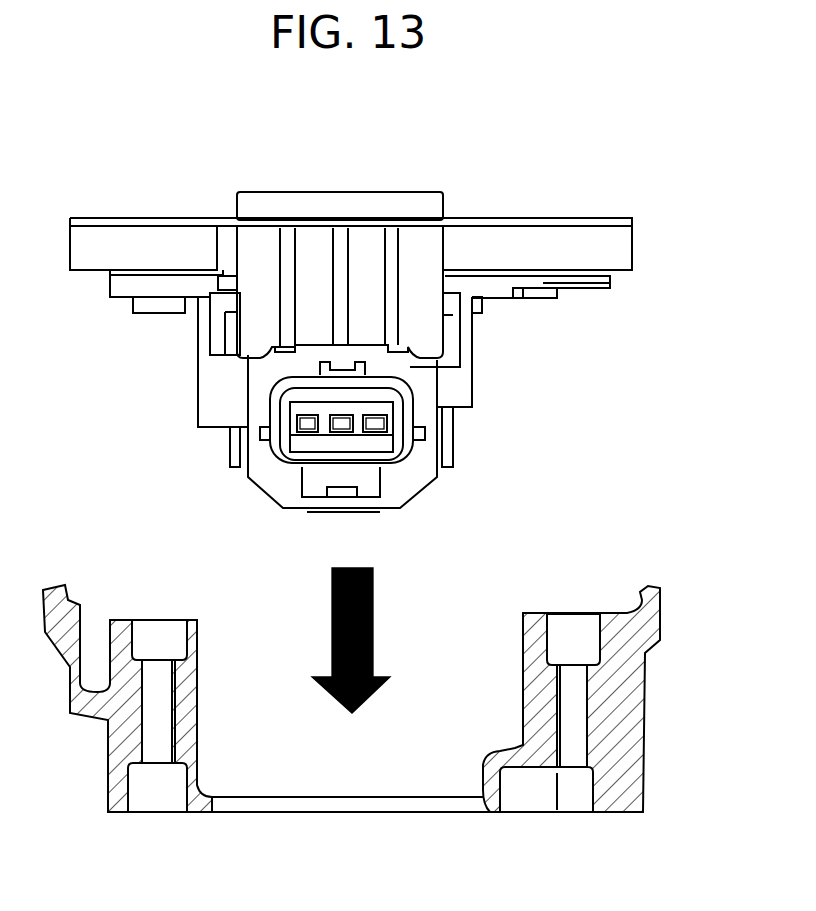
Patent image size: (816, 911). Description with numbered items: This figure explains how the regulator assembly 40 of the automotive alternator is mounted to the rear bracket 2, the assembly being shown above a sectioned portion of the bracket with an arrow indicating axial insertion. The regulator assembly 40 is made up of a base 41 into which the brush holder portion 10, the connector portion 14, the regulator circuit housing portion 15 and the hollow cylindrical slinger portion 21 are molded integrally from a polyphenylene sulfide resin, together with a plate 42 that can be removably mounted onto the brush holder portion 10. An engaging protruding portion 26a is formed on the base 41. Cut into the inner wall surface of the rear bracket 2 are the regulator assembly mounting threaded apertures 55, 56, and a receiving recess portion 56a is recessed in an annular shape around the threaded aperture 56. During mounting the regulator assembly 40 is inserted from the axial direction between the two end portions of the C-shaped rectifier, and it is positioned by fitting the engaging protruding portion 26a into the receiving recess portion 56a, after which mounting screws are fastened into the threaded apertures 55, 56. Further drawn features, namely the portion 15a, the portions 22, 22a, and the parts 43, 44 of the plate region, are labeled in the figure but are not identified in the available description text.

The rear bracket 2 is at (668, 612).
The brush holder portion 10 is at (372, 352).
The connector portion 14 is at (287, 453).
The regulator circuit housing portion 15 is at (215, 393).
The bracket engaging portion 15a is at (232, 332).
The slinger portion 21 is at (245, 216).
The leg 22 is at (458, 432).
The leg 22a is at (230, 442).
The engaging protruding portion 26a is at (137, 303).
The regulator assembly 40 is at (141, 135).
The base 41 is at (480, 362).
The plate 42 is at (585, 150).
The plate 43 is at (532, 243).
The connector portion 44 is at (420, 253).
The regulator assembly mounting threaded aperture 55 is at (590, 708).
The regulator assembly mounting threaded aperture 56 is at (163, 690).
The receiving recess portion 56a is at (138, 650).